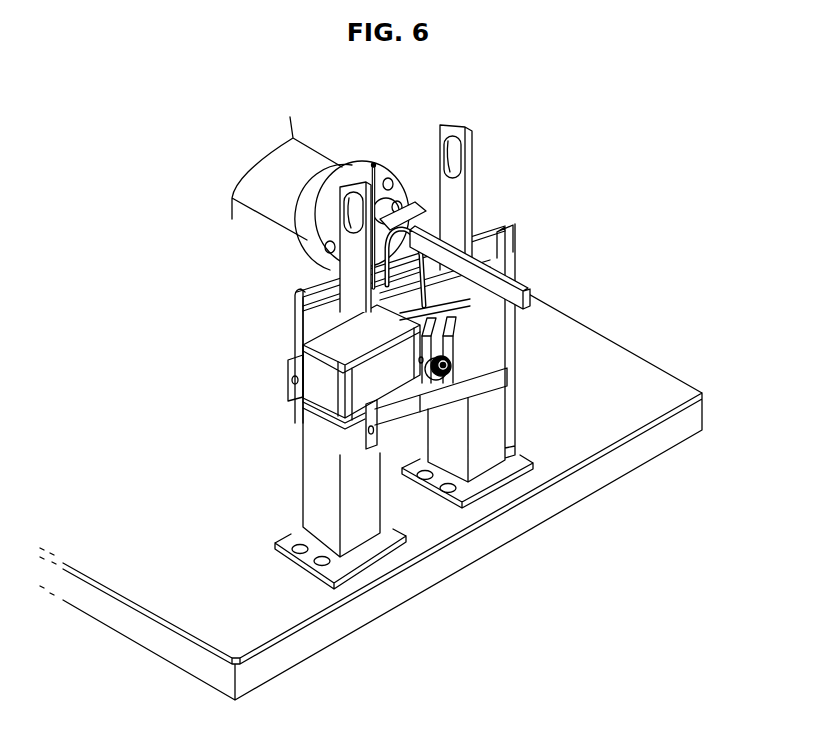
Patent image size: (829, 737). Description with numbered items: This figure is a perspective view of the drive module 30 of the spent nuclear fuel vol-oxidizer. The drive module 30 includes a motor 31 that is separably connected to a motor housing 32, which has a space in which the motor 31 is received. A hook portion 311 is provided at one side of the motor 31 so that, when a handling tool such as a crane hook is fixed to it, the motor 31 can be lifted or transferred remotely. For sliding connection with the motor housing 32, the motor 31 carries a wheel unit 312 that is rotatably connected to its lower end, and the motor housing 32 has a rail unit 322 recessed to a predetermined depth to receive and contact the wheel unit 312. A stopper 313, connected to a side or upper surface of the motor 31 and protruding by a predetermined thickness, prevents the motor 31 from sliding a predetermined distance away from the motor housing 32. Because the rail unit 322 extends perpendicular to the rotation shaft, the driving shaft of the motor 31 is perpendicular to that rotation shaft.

The drive module 30 is at (292, 401).
The motor 31 is at (303, 327).
The motor housing 32 is at (493, 340).
The hook portion 311 is at (417, 227).
The wheel unit 312 is at (455, 367).
The stopper 313 is at (427, 348).
The rail unit 322 is at (370, 405).